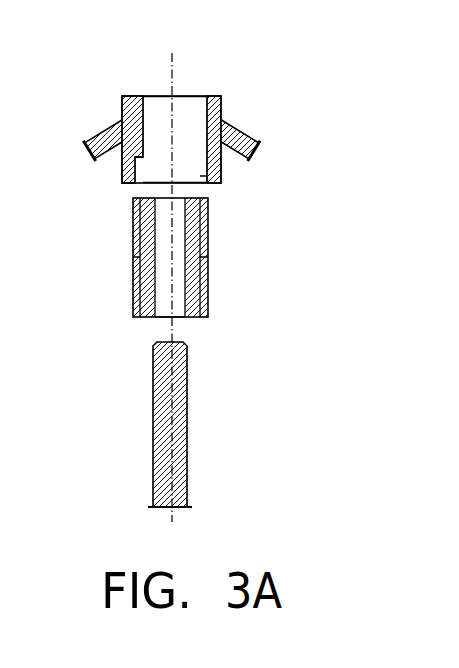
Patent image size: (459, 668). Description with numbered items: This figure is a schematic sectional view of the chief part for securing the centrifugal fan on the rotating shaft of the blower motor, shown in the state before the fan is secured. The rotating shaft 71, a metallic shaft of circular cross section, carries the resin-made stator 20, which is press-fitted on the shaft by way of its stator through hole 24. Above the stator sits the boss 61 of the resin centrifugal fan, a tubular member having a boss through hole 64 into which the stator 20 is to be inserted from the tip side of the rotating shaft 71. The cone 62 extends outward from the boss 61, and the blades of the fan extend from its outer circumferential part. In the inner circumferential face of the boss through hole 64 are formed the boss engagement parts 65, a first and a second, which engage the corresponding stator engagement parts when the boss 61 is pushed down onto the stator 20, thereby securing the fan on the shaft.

The stator 20 is at (207, 222).
The stator through hole 24 is at (171, 318).
The boss 61 is at (225, 98).
The cone 62 is at (255, 143).
The boss through hole 64 is at (197, 120).
The boss engagement part 65 is at (147, 120).
The rotating shaft 71 is at (188, 383).